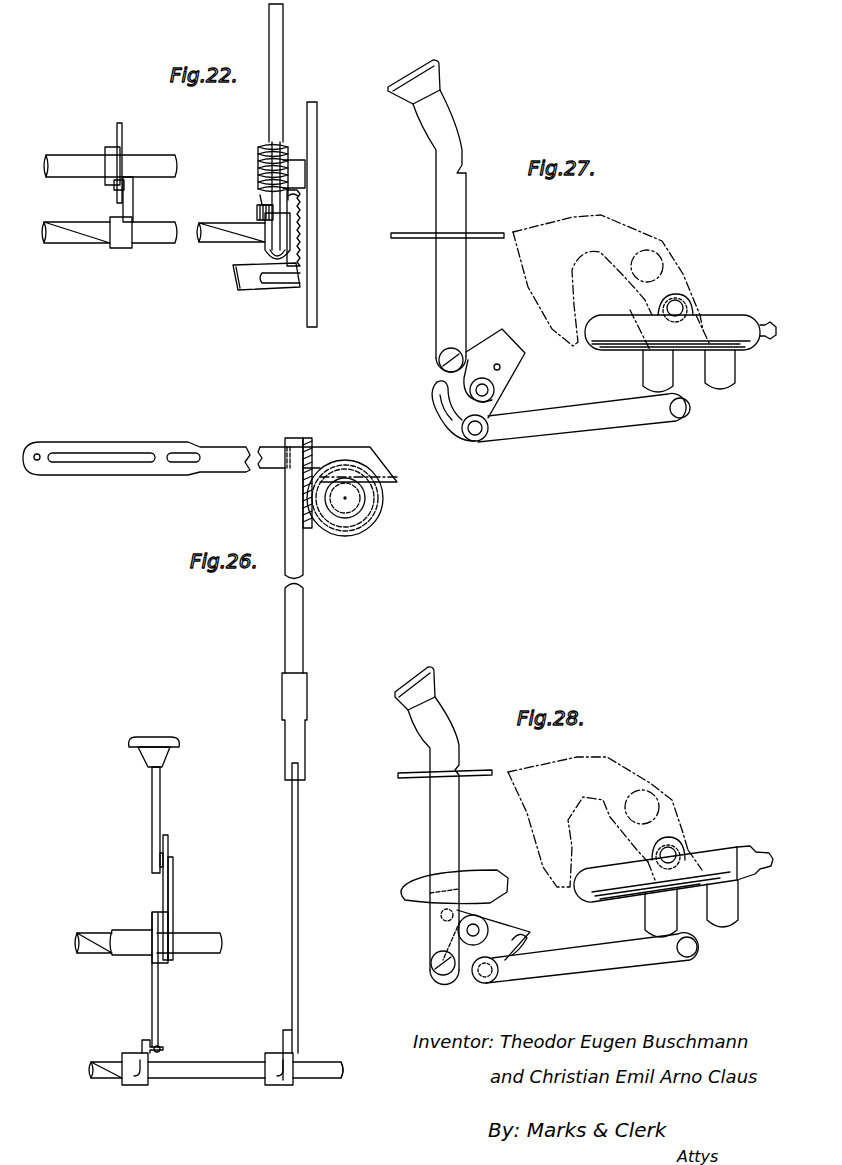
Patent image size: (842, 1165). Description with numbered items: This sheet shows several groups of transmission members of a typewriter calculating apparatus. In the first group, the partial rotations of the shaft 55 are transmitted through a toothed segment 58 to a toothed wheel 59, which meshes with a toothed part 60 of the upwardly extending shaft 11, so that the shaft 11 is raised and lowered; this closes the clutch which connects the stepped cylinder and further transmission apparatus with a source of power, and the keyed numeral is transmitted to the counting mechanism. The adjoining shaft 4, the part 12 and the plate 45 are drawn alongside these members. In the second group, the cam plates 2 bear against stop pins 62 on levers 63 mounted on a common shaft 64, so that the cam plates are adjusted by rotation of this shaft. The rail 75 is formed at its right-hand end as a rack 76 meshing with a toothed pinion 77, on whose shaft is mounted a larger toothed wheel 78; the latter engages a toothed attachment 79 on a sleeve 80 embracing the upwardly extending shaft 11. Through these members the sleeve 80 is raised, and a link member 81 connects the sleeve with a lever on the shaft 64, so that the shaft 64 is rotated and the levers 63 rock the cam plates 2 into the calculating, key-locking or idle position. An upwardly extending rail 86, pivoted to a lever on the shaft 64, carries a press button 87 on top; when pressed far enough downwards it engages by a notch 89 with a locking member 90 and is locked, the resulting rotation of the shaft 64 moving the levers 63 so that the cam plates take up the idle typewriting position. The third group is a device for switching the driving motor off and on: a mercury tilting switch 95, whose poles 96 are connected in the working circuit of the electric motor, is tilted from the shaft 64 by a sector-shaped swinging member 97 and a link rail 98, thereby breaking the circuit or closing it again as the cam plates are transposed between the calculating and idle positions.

In FIG. 26, the cam plate 2 is at (158, 1006).
In FIG. 22, the shaft 4 is at (77, 160).
In FIG. 26, the shaft 4 is at (98, 937).
In FIG. 22, the upwardly extending shaft 11 is at (283, 88).
In FIG. 22, the worm 12 is at (257, 216).
In FIG. 26, the guide plate 45 is at (167, 848).
In FIG. 22, the shaft 55 is at (92, 237).
In FIG. 22, the toothed segment 58 is at (275, 236).
In FIG. 22, the toothed wheel 59 is at (290, 158).
In FIG. 22, the toothed part 60 is at (262, 150).
In FIG. 28, the stop pin 62 is at (447, 918).
In FIG. 27, the lever 63 is at (506, 375).
In FIG. 28, the lever 63 is at (454, 887).
In FIG. 27, the common shaft 64 is at (470, 391).
In FIG. 26, the common shaft 64 is at (221, 1060).
In FIG. 28, the common shaft 64 is at (483, 928).
In FIG. 26, the rail 75 is at (140, 468).
In FIG. 26, the rack 76 is at (373, 462).
In FIG. 26, the toothed pinion 77 is at (362, 506).
In FIG. 26, the larger toothed wheel 78 is at (367, 530).
In FIG. 26, the toothed attachment 79 is at (313, 440).
In FIG. 26, the sleeve 80 is at (300, 607).
In FIG. 26, the link member 81 is at (298, 900).
In FIG. 27, the rail 86 is at (444, 200).
In FIG. 28, the rail 86 is at (438, 829).
In FIG. 27, the press button 87 is at (412, 82).
In FIG. 28, the press button 87 is at (413, 683).
In FIG. 27, the notch 89 is at (463, 176).
In FIG. 28, the notch 89 is at (458, 770).
In FIG. 27, the locking member 90 is at (497, 232).
In FIG. 28, the locking member 90 is at (492, 772).
In FIG. 27, the mercury tilting switch 95 is at (733, 320).
In FIG. 28, the mercury tilting switch 95 is at (726, 855).
In FIG. 27, the poles 96 is at (728, 381).
In FIG. 28, the poles 96 is at (733, 907).
In FIG. 27, the sector-shaped swinging member 97 is at (453, 432).
In FIG. 28, the sector-shaped swinging member 97 is at (498, 935).
In FIG. 27, the link rail 98 is at (613, 421).
In FIG. 28, the link rail 98 is at (600, 964).